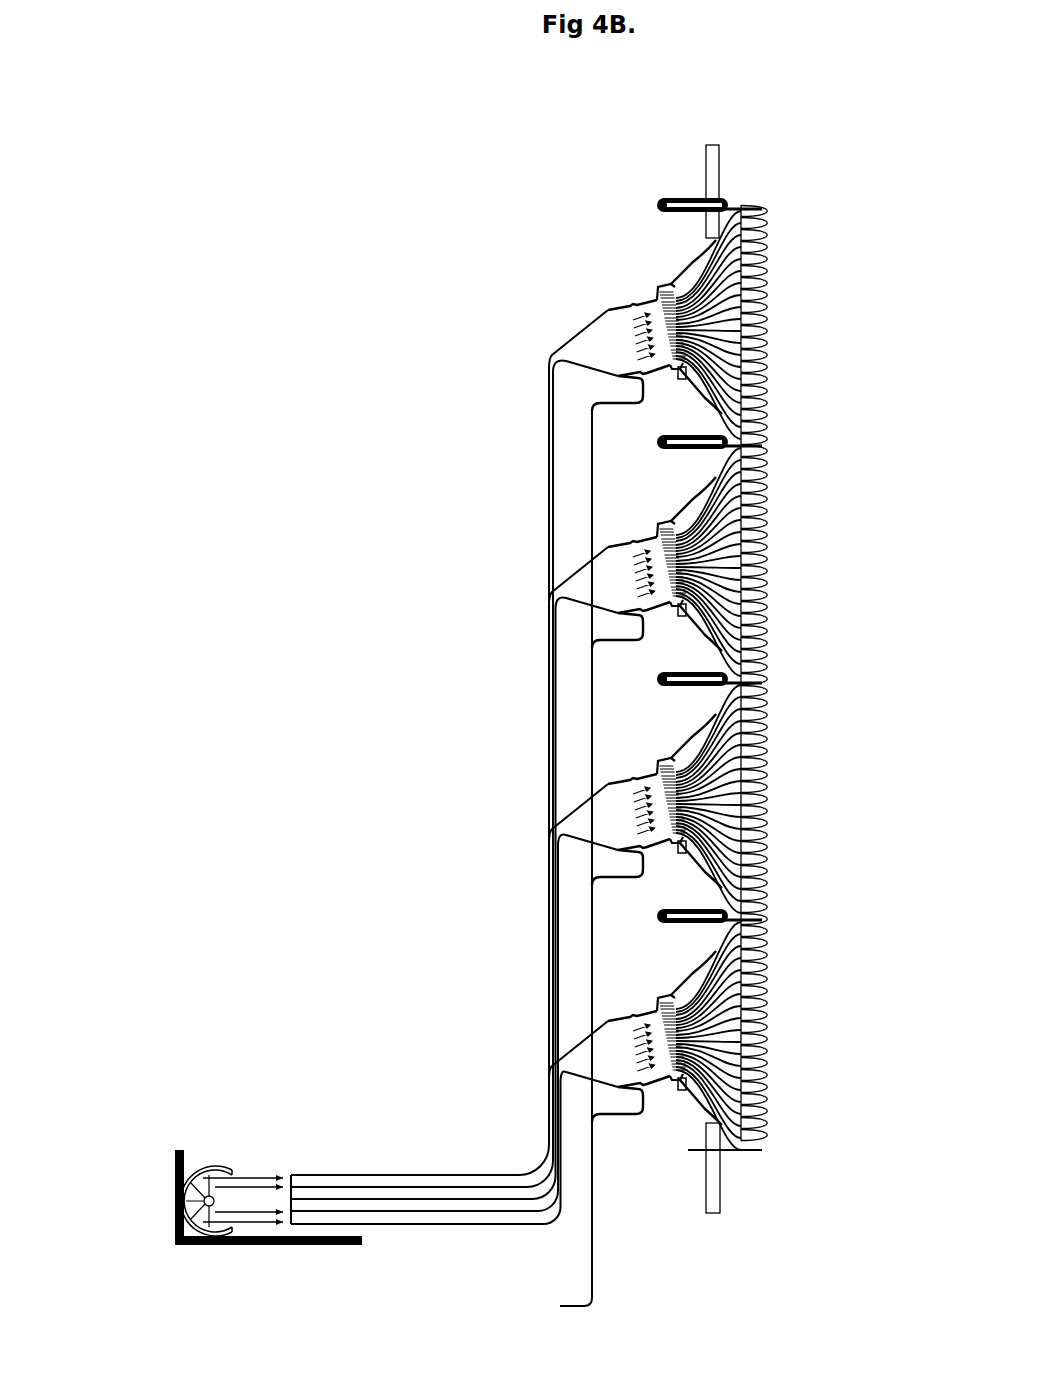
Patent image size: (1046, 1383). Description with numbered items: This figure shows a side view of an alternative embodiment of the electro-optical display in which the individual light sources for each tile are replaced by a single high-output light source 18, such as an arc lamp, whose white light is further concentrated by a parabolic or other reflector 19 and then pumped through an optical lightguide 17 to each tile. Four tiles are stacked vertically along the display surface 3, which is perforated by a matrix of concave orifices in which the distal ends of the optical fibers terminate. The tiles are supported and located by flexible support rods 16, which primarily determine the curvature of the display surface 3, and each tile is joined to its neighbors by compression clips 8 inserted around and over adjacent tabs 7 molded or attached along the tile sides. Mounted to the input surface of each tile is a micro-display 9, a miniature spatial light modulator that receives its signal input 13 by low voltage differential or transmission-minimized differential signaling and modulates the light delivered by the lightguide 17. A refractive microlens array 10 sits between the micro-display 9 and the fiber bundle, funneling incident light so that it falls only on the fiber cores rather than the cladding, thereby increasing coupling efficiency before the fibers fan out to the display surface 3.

The display surface 3 is at (780, 268).
The tabs 7 is at (740, 200).
The compression clips 8 is at (662, 195).
The micro-display 9 is at (610, 300).
The refractive microlens array 10 is at (650, 292).
The signal input 13 is at (605, 1274).
The support rods 16 is at (716, 157).
The optical lightguide 17 is at (542, 496).
The light source 18 is at (196, 1200).
The reflector 19 is at (218, 1162).